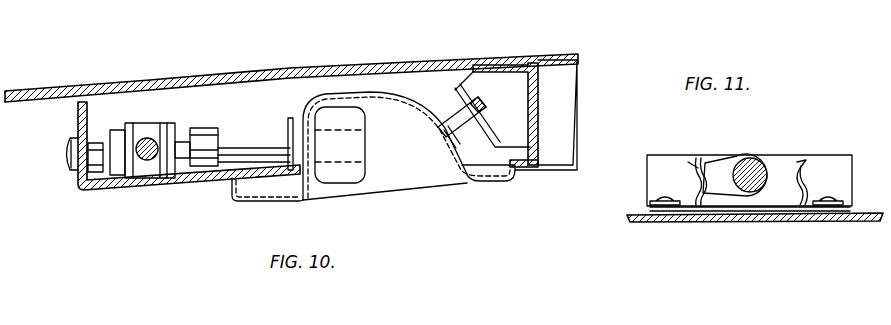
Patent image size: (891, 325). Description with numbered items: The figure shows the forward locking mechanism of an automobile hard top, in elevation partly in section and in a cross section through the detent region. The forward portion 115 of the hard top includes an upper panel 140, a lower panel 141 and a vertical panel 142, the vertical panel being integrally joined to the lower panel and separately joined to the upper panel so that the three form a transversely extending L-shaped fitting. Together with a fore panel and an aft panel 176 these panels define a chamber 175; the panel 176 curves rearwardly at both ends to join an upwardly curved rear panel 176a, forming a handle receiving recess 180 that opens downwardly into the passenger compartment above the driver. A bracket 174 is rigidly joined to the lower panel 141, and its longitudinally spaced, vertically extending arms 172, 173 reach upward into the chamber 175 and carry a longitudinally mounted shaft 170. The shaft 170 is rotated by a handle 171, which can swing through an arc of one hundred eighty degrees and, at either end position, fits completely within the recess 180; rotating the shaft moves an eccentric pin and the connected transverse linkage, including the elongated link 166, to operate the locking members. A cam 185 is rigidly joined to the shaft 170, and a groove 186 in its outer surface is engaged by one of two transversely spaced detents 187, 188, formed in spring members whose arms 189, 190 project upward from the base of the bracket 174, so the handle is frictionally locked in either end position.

In FIG. 10, the forward portion 115 is at (304, 52).
In FIG. 10, the upper panel 140 is at (140, 90).
In FIG. 10, the lower panel 141 is at (112, 192).
In FIG. 11, the lower panel 141 is at (753, 218).
In FIG. 10, the vertical panel 142 is at (78, 124).
In FIG. 10, the elongated link 166 is at (143, 136).
In FIG. 10, the shaft 170 is at (280, 133).
In FIG. 11, the shaft 170 is at (760, 168).
In FIG. 10, the handle 171 is at (350, 148).
In FIG. 10, the arm 172 is at (182, 133).
In FIG. 10, the arm 173 is at (318, 70).
In FIG. 10, the bracket 174 is at (171, 184).
In FIG. 11, the bracket 174 is at (722, 213).
In FIG. 10, the chamber 175 is at (253, 69).
In FIG. 10, the panel 176 is at (313, 186).
In FIG. 10, the rear panel 176a is at (413, 110).
In FIG. 10, the handle receiving recess 180 is at (435, 169).
In FIG. 10, the cam 185 is at (187, 158).
In FIG. 11, the cam 185 is at (722, 163).
In FIG. 11, the groove 186 is at (703, 157).
In FIG. 10, the detent 187 is at (217, 142).
In FIG. 11, the detent 187 is at (690, 168).
In FIG. 11, the detent 188 is at (803, 165).
In FIG. 11, the arm 189 is at (690, 194).
In FIG. 11, the arm 190 is at (785, 207).